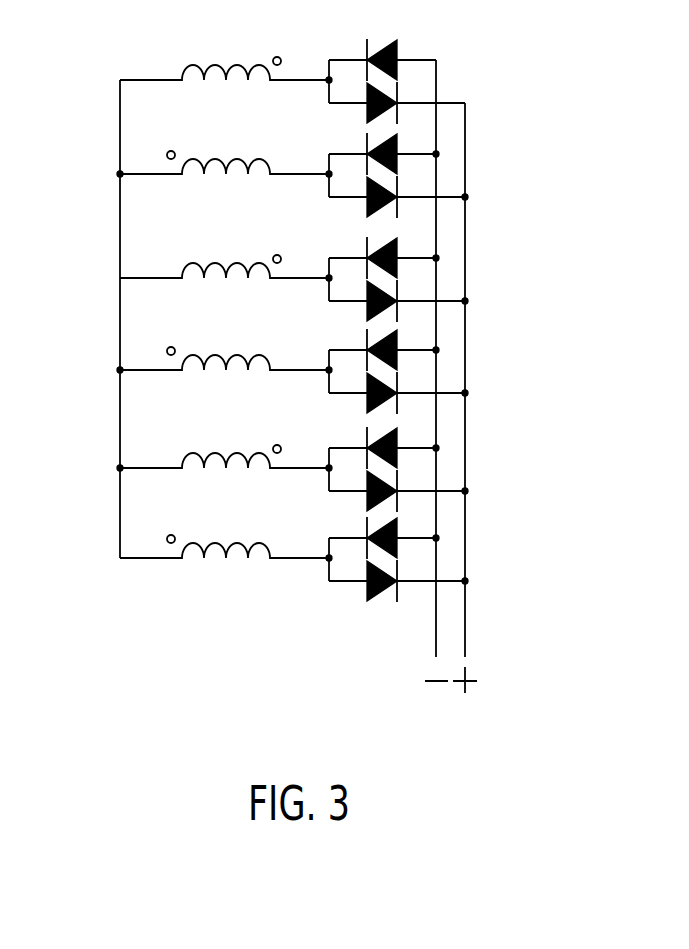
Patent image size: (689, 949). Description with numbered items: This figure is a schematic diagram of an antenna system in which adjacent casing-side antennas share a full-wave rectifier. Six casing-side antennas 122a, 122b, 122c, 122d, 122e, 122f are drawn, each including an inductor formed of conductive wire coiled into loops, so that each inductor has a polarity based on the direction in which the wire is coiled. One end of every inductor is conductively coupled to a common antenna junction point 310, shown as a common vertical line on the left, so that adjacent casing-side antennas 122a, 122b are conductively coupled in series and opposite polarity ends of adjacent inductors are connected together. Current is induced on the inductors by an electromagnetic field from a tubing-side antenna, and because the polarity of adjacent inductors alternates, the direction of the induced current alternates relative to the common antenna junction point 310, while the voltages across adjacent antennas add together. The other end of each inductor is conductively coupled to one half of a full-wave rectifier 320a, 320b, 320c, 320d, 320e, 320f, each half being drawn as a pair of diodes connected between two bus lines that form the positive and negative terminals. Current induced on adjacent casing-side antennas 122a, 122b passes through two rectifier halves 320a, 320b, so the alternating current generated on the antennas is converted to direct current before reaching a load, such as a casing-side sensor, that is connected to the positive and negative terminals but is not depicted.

The common antenna junction point 310 is at (118, 190).
The casing-side antenna 122a is at (188, 85).
The casing-side antenna 122b is at (188, 179).
The casing-side antenna 122c is at (188, 283).
The casing-side antenna 122d is at (188, 375).
The casing-side antenna 122e is at (188, 473).
The casing-side antenna 122f is at (185, 562).
The half of a full-wave rectifier 320a is at (470, 80).
The half of a full-wave rectifier 320b is at (467, 174).
The half of a full-wave rectifier 320c is at (467, 278).
The half of a full-wave rectifier 320d is at (467, 370).
The half of a full-wave rectifier 320e is at (467, 468).
The half of a full-wave rectifier 320f is at (467, 558).